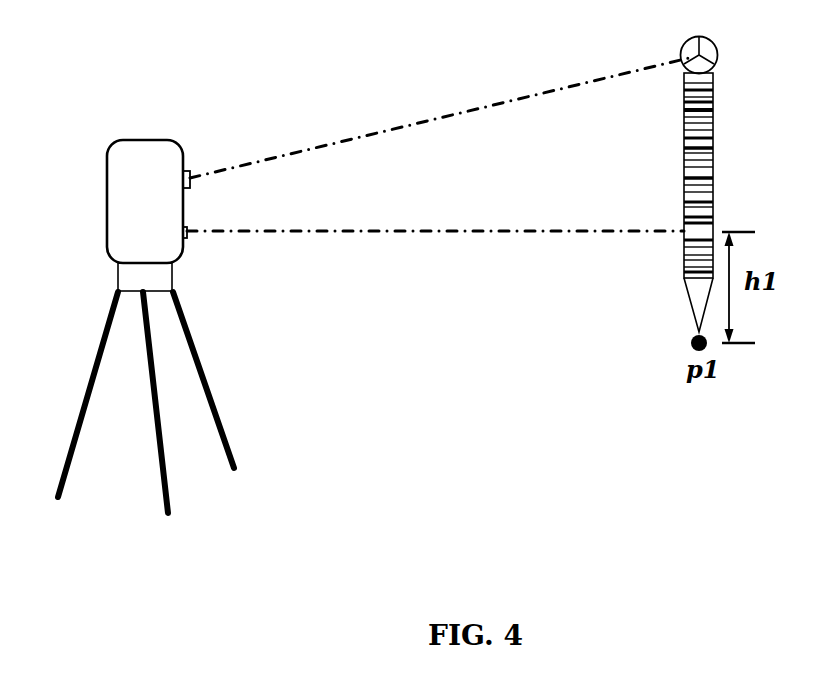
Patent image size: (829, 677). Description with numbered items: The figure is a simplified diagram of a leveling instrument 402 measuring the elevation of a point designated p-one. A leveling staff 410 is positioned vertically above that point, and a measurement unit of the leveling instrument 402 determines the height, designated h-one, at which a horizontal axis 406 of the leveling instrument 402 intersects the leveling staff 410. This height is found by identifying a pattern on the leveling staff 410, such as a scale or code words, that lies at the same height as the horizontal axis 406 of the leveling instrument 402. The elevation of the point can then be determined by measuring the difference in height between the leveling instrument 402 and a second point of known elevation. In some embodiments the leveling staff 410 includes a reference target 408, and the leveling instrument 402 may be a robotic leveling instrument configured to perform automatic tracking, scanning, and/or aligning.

The leveling instrument 402 is at (114, 143).
The horizontal axis 406 is at (388, 233).
The reference target 408 is at (716, 43).
The leveling staff 410 is at (714, 143).